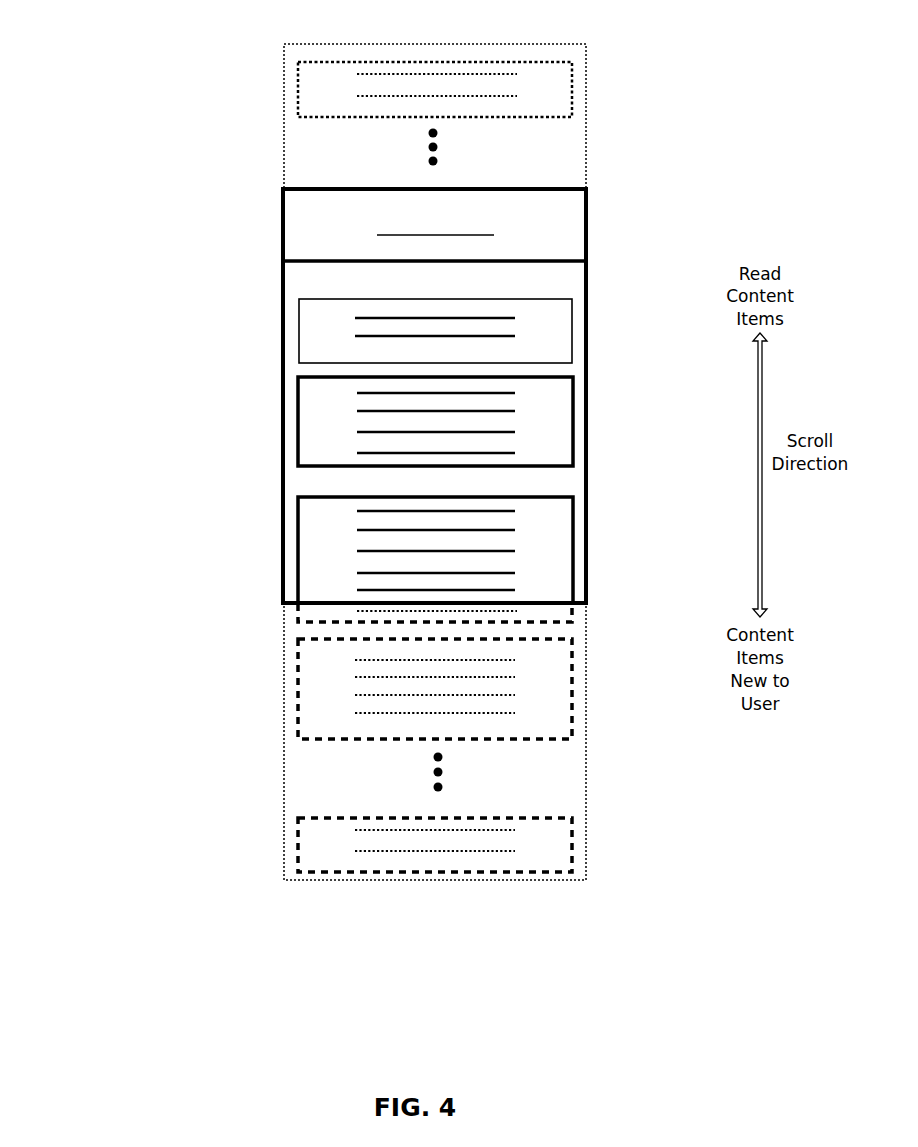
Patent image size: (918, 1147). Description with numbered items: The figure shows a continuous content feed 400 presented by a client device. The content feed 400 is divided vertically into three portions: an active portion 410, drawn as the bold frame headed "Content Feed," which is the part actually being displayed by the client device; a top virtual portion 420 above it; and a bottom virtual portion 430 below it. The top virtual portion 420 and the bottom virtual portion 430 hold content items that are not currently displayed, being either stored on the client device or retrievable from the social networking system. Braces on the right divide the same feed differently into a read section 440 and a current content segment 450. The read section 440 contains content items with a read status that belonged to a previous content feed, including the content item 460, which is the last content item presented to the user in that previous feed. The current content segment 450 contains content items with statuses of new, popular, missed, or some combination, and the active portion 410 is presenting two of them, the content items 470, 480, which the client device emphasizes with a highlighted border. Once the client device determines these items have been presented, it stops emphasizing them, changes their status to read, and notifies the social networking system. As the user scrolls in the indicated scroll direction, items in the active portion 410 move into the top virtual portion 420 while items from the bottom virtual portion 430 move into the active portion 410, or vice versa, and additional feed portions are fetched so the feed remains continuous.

The continuous content feed 400 is at (44, 19).
The active portion 410 is at (243, 188).
The top virtual portion 420 is at (243, 45).
The bottom virtual portion 430 is at (243, 619).
The read section 440 is at (594, 45).
The current content segment 450 is at (594, 375).
The content item 460 is at (567, 327).
The content item 470 is at (575, 420).
The content item 480 is at (575, 550).